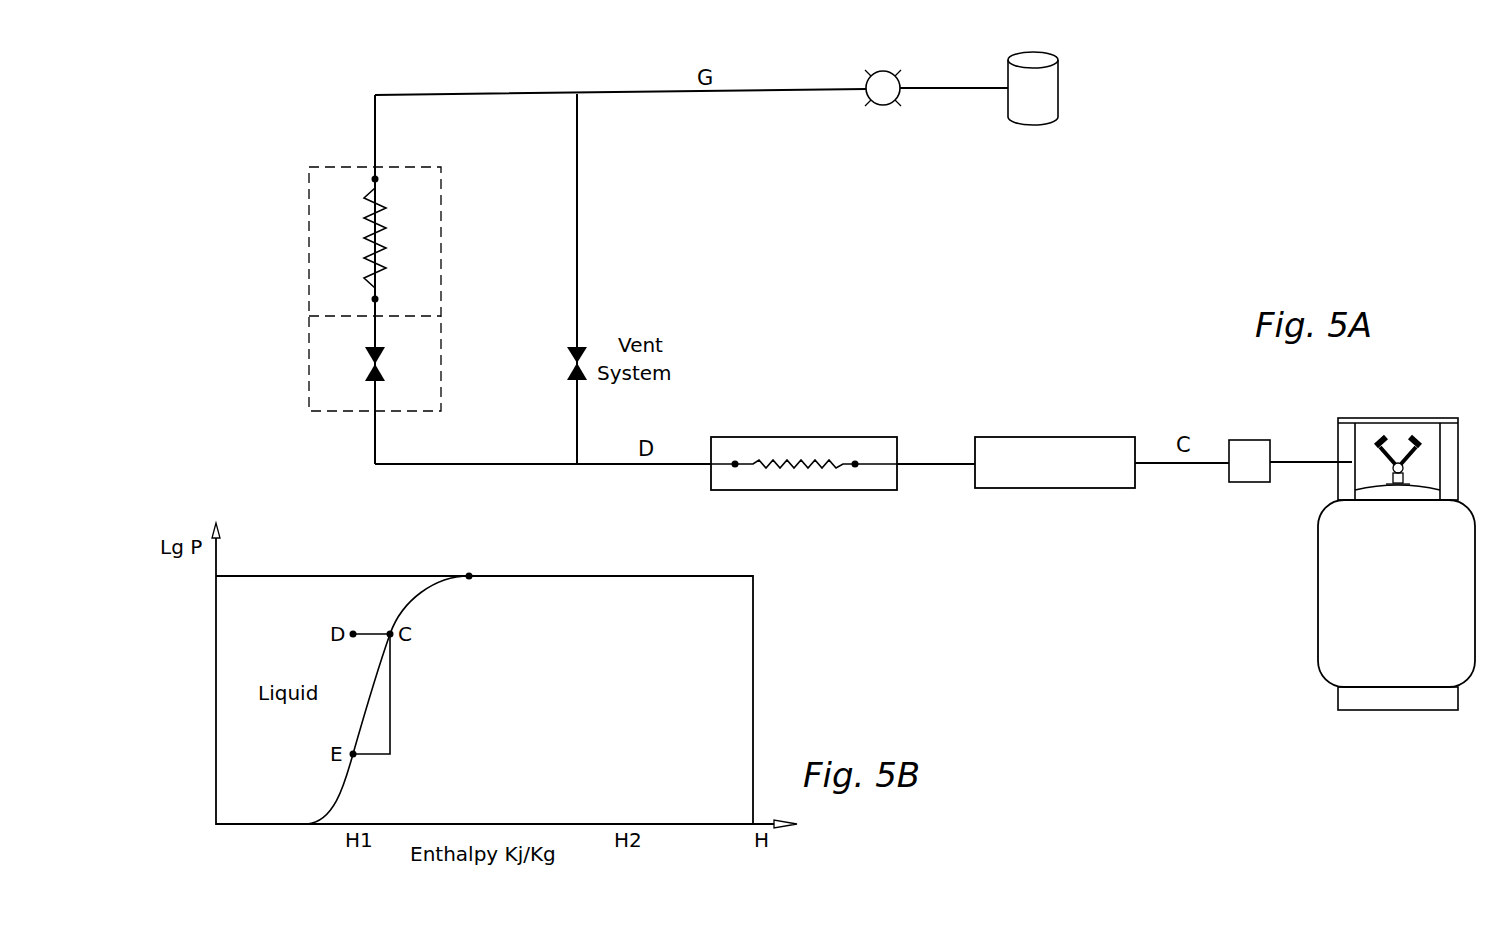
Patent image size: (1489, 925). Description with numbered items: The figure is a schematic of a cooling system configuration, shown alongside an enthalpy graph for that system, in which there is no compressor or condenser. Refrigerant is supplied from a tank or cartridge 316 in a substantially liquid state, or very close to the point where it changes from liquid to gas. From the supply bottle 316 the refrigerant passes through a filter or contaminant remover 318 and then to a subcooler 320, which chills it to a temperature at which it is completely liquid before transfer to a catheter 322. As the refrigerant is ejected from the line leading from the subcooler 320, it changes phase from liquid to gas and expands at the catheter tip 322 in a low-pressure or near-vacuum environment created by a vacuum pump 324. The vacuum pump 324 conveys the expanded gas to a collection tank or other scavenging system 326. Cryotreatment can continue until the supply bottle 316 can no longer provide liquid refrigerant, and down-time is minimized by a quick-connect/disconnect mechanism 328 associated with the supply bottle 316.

The tank or cartridge 316 is at (1318, 630).
The filter or contaminant remover 318 is at (1047, 437).
The subcooler 320 is at (865, 437).
The catheter 322 is at (433, 165).
The vacuum pump 324 is at (870, 70).
The scavenging system 326 is at (1059, 100).
The quick-connect/disconnect mechanism 328 is at (1239, 440).